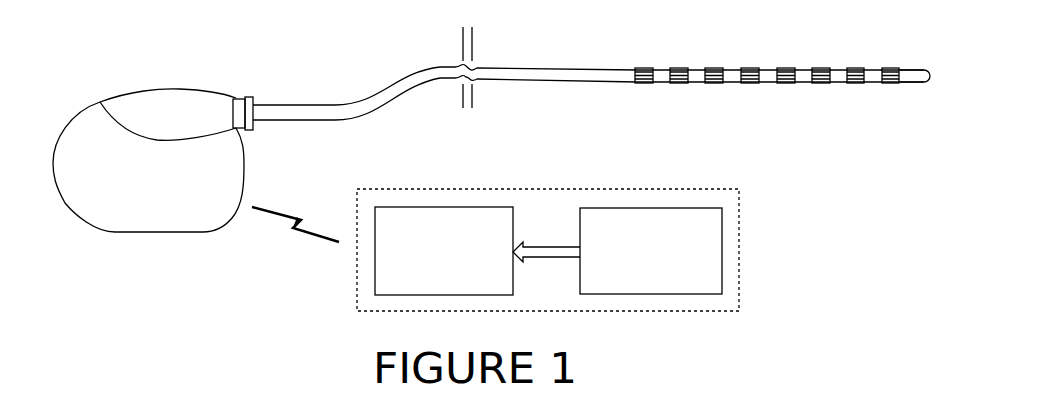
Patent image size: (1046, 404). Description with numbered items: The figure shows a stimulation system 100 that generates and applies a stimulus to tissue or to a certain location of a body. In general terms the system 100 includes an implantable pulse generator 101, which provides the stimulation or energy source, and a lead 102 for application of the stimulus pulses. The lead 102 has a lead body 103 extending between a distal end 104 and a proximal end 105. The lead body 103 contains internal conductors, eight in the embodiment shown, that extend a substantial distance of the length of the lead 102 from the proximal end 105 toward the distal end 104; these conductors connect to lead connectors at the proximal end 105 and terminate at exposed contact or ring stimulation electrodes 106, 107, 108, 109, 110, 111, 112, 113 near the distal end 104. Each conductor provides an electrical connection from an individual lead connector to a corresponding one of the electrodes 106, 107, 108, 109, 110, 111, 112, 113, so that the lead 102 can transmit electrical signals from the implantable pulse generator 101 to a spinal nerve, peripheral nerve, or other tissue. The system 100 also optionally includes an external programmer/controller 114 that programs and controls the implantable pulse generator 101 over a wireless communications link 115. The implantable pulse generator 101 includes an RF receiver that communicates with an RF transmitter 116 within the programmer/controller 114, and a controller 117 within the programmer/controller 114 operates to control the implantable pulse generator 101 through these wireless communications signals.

The stimulation system 100 is at (372, 168).
The implantable pulse generator 101 is at (180, 87).
The lead 102 is at (591, 86).
The lead body 103 is at (510, 65).
The distal end 104 is at (924, 97).
The proximal end 105 is at (264, 91).
The stimulation electrode 106 is at (647, 67).
The stimulation electrode 107 is at (677, 84).
The stimulation electrode 108 is at (717, 67).
The stimulation electrode 109 is at (748, 84).
The stimulation electrode 110 is at (788, 67).
The stimulation electrode 111 is at (822, 84).
The stimulation electrode 112 is at (858, 67).
The stimulation electrode 113 is at (890, 84).
The external programmer/controller 114 is at (548, 231).
The wireless communications link 115 is at (290, 236).
The RF transmitter 116 is at (426, 272).
The controller 117 is at (633, 273).